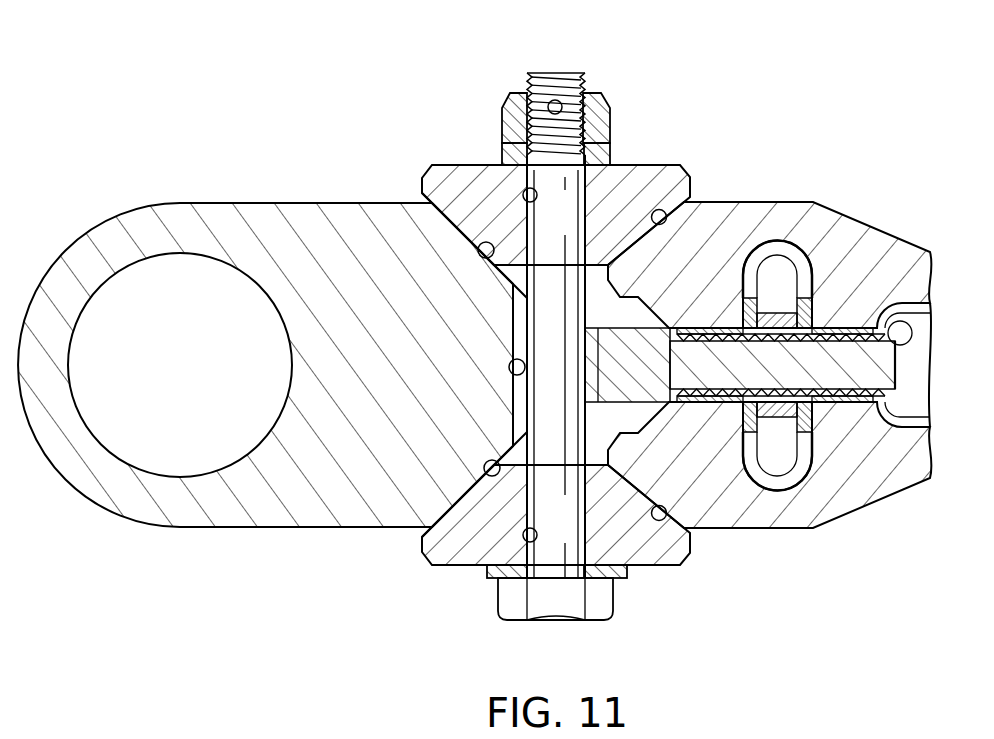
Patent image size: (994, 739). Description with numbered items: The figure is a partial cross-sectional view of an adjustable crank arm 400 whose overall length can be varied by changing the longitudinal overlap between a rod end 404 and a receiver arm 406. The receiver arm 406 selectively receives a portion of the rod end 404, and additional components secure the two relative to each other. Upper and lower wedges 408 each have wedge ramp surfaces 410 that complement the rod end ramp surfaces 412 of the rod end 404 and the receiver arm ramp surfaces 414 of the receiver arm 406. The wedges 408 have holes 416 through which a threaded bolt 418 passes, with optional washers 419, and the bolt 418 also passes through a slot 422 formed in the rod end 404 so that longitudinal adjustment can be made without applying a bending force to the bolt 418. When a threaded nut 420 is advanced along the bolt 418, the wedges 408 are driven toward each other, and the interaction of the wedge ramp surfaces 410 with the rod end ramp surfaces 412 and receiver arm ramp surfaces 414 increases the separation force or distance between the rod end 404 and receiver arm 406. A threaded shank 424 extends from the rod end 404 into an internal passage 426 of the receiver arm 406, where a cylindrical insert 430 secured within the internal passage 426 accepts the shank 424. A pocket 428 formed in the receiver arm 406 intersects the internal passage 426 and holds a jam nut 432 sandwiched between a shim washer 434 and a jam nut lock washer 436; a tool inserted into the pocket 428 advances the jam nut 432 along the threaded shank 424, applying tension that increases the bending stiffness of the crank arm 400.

The adjustable crank arm 400 is at (324, 61).
The rod end 404 is at (241, 200).
The receiver arm 406 is at (864, 218).
The wedges 408 is at (666, 172).
The wedge ramp surfaces 410 is at (440, 227).
The rod end ramp surfaces 412 is at (478, 253).
The receiver arm ramp surfaces 414 is at (664, 224).
The holes 416 is at (522, 197).
The threaded bolt 418 is at (557, 623).
The washers 419 is at (503, 153).
The threaded nut 420 is at (507, 117).
The slot 422 is at (509, 367).
The threaded shank 424 is at (893, 302).
The internal passage 426 is at (678, 334).
The pocket 428 is at (770, 465).
The cylindrical insert 430 is at (860, 328).
The jam nut 432 is at (783, 312).
The shim washer 434 is at (811, 417).
The jam nut lock washer 436 is at (746, 312).